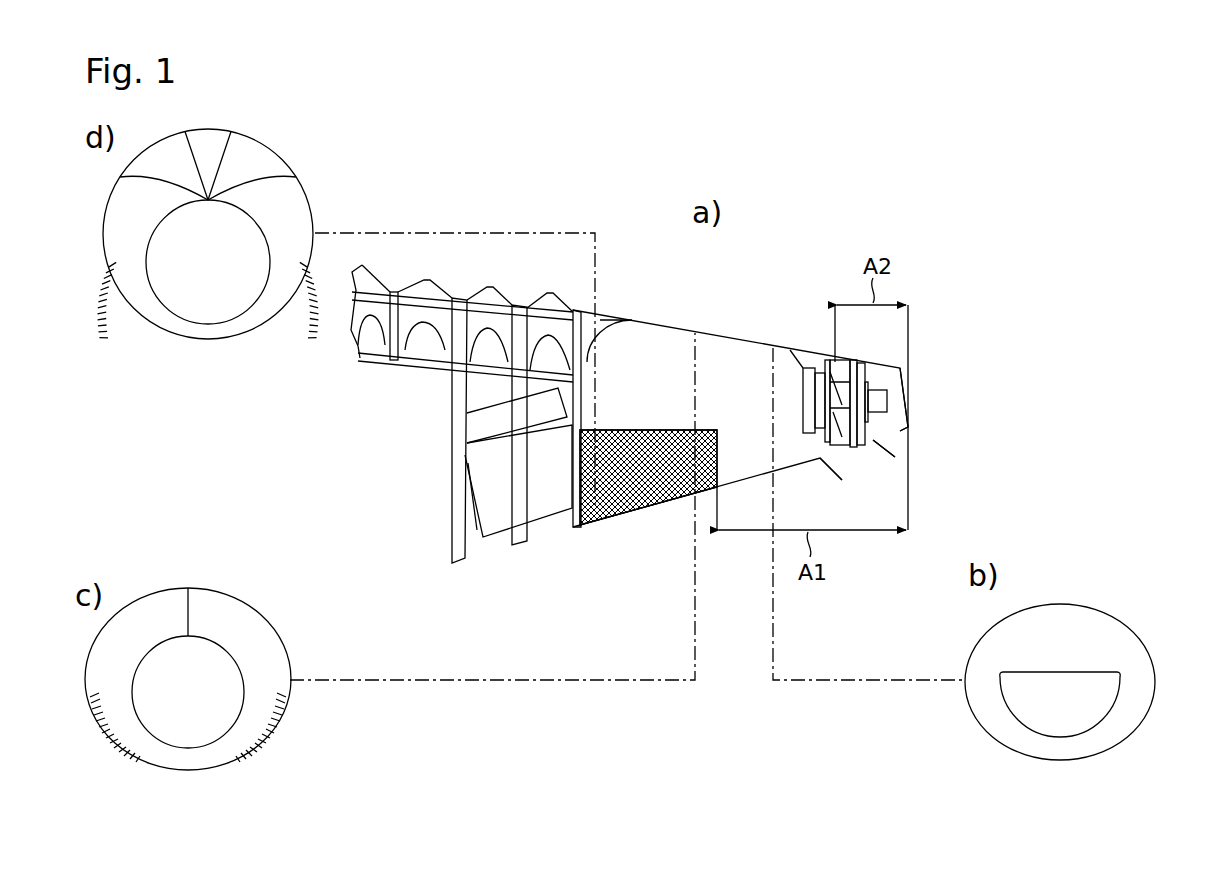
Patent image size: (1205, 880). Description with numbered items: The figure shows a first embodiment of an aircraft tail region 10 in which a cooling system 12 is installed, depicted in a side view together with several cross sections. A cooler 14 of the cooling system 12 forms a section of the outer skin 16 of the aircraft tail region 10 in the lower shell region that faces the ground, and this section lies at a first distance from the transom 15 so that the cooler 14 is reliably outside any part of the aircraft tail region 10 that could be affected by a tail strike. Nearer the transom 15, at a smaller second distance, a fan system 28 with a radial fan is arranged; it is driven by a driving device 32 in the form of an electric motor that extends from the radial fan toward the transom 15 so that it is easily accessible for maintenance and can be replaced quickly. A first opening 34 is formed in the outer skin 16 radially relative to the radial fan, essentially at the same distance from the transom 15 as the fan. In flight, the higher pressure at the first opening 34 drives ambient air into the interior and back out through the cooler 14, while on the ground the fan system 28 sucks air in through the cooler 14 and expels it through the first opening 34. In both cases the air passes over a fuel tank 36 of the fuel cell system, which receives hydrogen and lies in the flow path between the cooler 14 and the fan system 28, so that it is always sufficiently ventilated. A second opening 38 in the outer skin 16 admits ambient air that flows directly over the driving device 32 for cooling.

The aircraft tail region 10 is at (855, 213).
The cooling system 12 is at (656, 300).
The cooler 14 is at (648, 512).
The transom 15 is at (908, 392).
The outer skin 16 is at (722, 335).
The fan system 28 is at (840, 370).
The driving device 32 is at (876, 390).
The first opening 34 is at (838, 460).
The fuel tank 36 is at (749, 367).
The second opening 38 is at (890, 440).